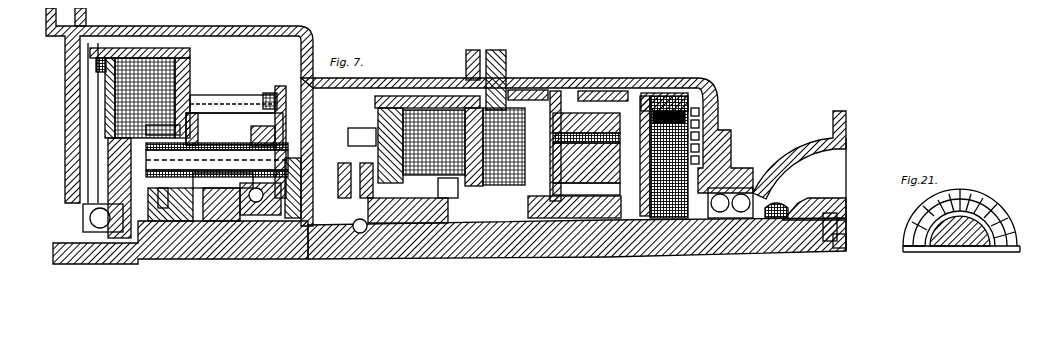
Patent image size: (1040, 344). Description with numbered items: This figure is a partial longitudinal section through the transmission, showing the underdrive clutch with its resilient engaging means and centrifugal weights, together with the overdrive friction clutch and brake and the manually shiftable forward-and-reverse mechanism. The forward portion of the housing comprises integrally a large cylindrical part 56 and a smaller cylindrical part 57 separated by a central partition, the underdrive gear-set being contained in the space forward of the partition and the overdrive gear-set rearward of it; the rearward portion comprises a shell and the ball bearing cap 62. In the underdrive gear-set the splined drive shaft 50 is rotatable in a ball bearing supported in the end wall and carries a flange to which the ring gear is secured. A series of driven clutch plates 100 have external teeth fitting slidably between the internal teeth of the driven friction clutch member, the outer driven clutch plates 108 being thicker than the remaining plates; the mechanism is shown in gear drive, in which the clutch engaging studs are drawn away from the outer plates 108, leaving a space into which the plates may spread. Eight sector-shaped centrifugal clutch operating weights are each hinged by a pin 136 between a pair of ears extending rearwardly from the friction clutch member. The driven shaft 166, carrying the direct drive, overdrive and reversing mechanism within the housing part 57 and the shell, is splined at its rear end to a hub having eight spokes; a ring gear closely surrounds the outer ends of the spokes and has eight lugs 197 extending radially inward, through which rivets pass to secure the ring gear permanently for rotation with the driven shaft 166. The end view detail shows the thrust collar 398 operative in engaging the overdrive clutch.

In FIG. 7, the splined drive shaft 50 is at (45, 250).
In FIG. 7, the large cylindrical part 56 is at (122, 22).
In FIG. 7, the smaller cylindrical part 57 is at (368, 74).
In FIG. 7, the ball bearing cap 62 is at (766, 160).
In FIG. 7, the driven clutch plates 100 is at (136, 52).
In FIG. 7, the outer driven clutch plates 108 is at (100, 97).
In FIG. 7, the hinge pin 136 is at (258, 150).
In FIG. 7, the driven shaft 166 is at (306, 269).
In FIG. 21, the driven shaft 166 is at (960, 228).
In FIG. 7, the lugs 197 is at (637, 120).
In FIG. 21, the segmented ring 398 is at (924, 200).